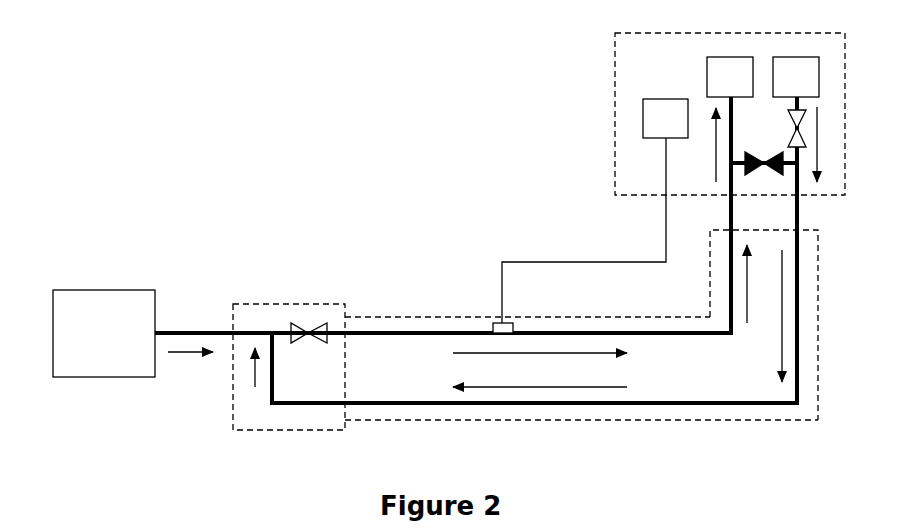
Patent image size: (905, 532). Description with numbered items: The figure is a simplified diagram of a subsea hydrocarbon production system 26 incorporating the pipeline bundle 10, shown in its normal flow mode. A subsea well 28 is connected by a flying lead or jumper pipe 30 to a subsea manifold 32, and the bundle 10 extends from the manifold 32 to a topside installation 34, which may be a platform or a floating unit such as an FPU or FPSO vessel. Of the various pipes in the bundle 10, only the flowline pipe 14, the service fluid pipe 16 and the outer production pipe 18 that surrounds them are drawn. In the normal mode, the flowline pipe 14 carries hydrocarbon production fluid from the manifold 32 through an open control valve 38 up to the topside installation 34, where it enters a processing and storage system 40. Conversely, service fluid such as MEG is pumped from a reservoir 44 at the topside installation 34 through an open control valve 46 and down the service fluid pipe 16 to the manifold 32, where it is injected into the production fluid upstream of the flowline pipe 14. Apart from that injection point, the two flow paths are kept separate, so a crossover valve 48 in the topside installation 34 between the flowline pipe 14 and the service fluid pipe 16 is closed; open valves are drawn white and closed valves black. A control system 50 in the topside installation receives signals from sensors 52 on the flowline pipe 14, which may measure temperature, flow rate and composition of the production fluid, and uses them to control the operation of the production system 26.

The pipeline bundle 10 is at (418, 283).
The flowline pipe 14 is at (410, 340).
The service fluid pipe 16 is at (701, 399).
The outer production pipe 18 is at (820, 310).
The subsea hydrocarbon production system 26 is at (350, 152).
The subsea well 28 is at (63, 325).
The jumper pipe 30 is at (185, 331).
The subsea manifold 32 is at (257, 298).
The topside installation 34 is at (847, 60).
The control valve 38 is at (299, 328).
The processing and storage system 40 is at (731, 62).
The reservoir 44 is at (797, 62).
The control valve 46 is at (794, 128).
The crossover valve 48 is at (765, 157).
The control system 50 is at (665, 110).
The sensors 52 is at (497, 323).